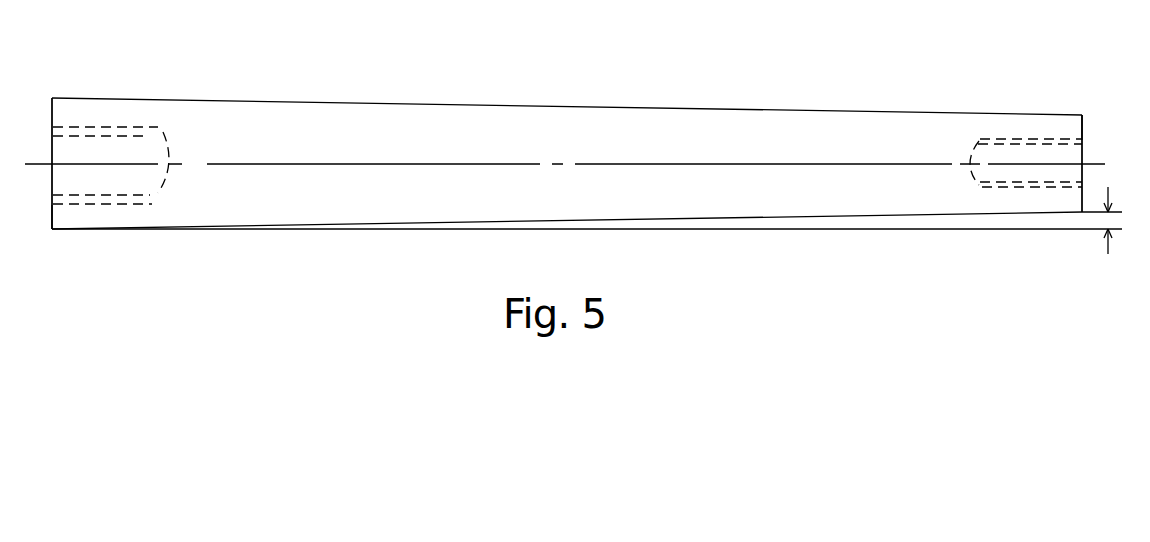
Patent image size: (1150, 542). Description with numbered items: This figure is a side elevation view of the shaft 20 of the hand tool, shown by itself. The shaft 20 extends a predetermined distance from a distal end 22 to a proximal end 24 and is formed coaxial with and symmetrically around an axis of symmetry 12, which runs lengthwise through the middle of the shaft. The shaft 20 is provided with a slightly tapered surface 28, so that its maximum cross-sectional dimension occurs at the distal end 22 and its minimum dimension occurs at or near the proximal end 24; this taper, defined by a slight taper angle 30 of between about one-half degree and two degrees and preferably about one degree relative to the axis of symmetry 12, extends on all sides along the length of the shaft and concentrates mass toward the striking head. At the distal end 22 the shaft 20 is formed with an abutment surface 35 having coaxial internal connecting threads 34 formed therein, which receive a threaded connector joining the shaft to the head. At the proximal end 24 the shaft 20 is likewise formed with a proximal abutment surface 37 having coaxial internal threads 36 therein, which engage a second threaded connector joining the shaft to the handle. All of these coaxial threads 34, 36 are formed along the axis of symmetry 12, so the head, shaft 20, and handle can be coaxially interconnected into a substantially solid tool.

The axis of symmetry 12 is at (362, 163).
The shaft 20 is at (536, 85).
The distal end 22 is at (52, 98).
The proximal end 24 is at (1082, 113).
The tapered surface 28 is at (757, 218).
The taper angle 30 is at (1107, 218).
The internal connecting threads 34 is at (165, 142).
The abutment surface 35 is at (52, 222).
The internal threads 36 is at (977, 148).
The proximal abutment surface 37 is at (1082, 133).